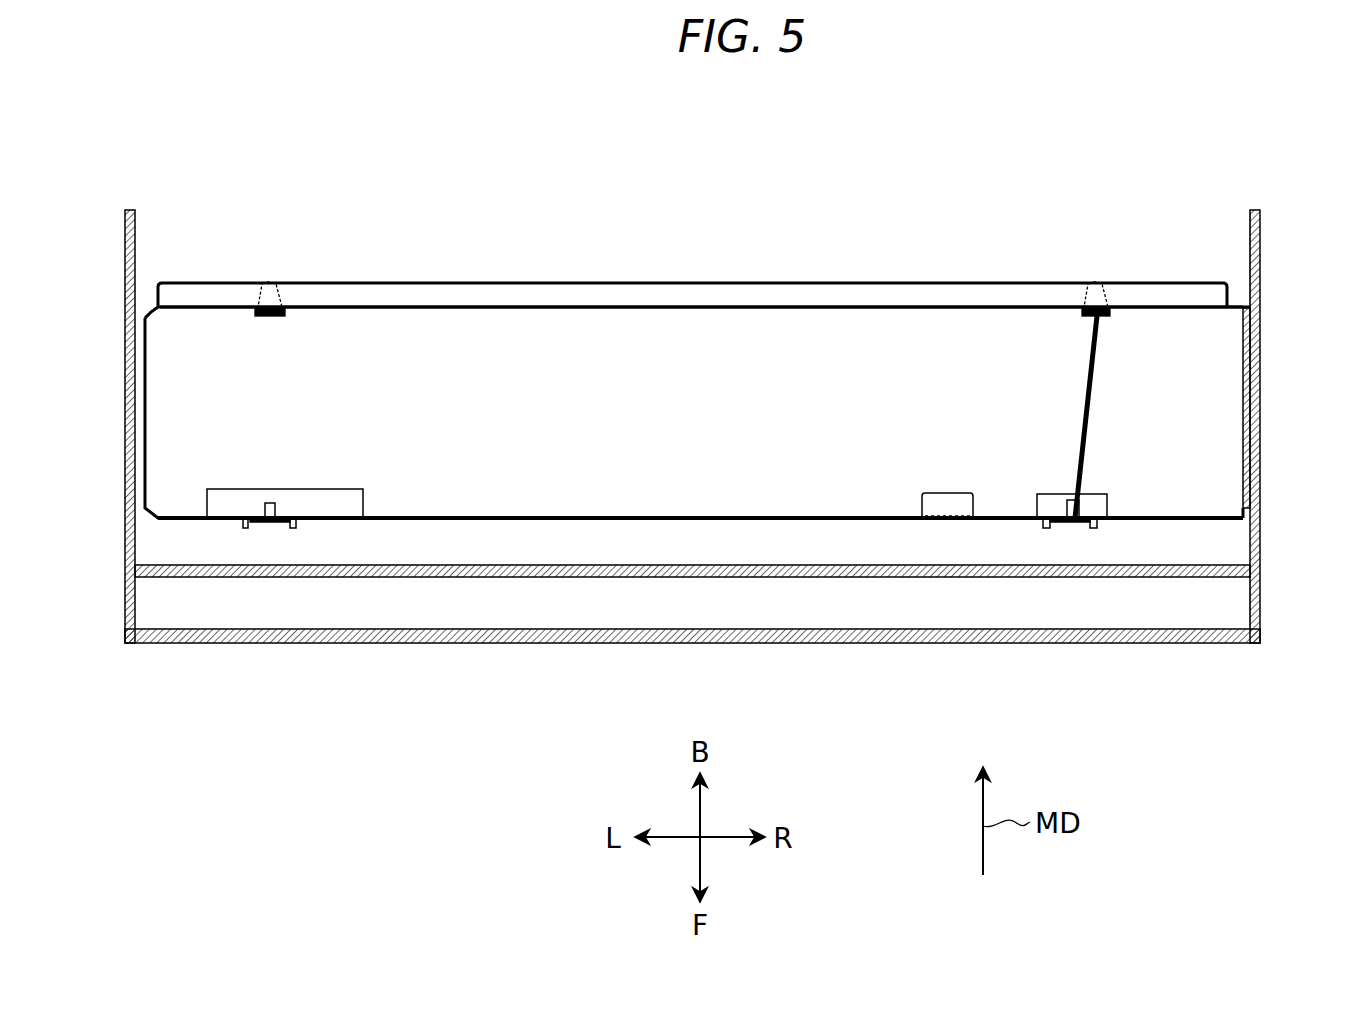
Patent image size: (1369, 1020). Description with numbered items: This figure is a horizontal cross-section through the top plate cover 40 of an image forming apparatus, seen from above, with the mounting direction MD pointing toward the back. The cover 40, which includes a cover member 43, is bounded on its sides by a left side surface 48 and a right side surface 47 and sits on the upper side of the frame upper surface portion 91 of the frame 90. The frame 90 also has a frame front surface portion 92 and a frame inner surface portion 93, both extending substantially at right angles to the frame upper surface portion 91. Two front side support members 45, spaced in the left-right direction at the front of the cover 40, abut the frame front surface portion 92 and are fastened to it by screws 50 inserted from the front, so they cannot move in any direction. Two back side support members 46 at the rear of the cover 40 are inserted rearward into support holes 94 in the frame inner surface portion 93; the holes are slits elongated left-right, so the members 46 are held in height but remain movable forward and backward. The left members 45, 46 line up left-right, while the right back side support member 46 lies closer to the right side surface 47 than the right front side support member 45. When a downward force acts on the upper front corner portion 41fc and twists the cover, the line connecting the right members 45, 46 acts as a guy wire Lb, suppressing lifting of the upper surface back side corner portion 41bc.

The top plate cover 40 is at (735, 172).
The upper surface back side corner portion 41bc is at (1218, 253).
The upper front corner portion 41fc is at (1218, 604).
The cover member 43 is at (548, 643).
The front side support members 45 is at (293, 528).
The back side support members 46 is at (266, 284).
The right side surface 47 is at (1260, 343).
The left side surface 48 is at (126, 385).
The screws 50 is at (268, 528).
The frame 90 is at (640, 283).
The frame upper surface portion 91 is at (797, 375).
The frame front surface portion 92 is at (870, 520).
The frame inner surface portion 93 is at (918, 307).
The support holes 94 is at (262, 300).
The guy wire Lb is at (1090, 422).